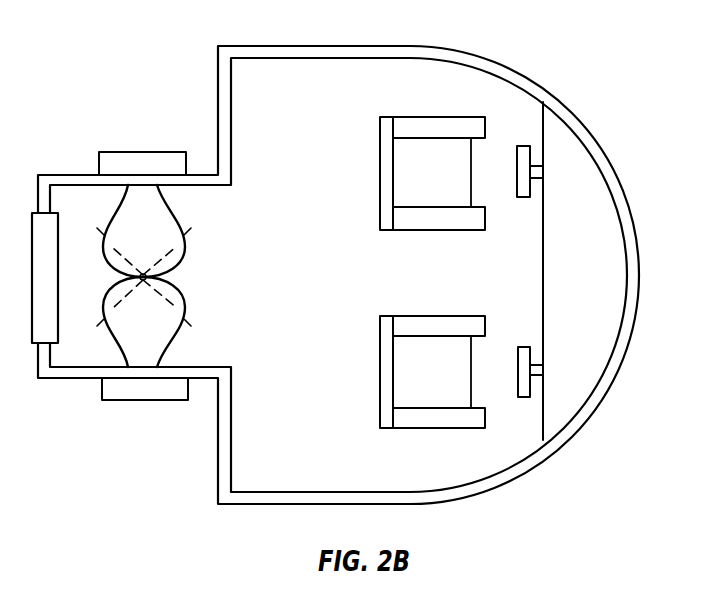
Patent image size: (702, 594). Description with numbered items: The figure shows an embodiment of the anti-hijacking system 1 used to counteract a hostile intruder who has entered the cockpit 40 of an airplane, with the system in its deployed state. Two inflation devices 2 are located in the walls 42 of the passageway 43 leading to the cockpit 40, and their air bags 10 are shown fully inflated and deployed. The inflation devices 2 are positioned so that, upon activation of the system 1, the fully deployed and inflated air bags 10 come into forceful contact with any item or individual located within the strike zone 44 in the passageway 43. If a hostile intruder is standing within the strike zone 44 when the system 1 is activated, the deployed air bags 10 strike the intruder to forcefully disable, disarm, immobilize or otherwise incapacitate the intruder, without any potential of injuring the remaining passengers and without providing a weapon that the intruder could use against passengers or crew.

The anti-hijacking system 1 is at (571, 64).
The inflation devices 2 is at (118, 151).
The air bags 10 is at (156, 246).
The cockpit 40 is at (334, 283).
The walls 42 is at (322, 45).
The passageway 43 is at (92, 217).
The strike zone 44 is at (178, 276).